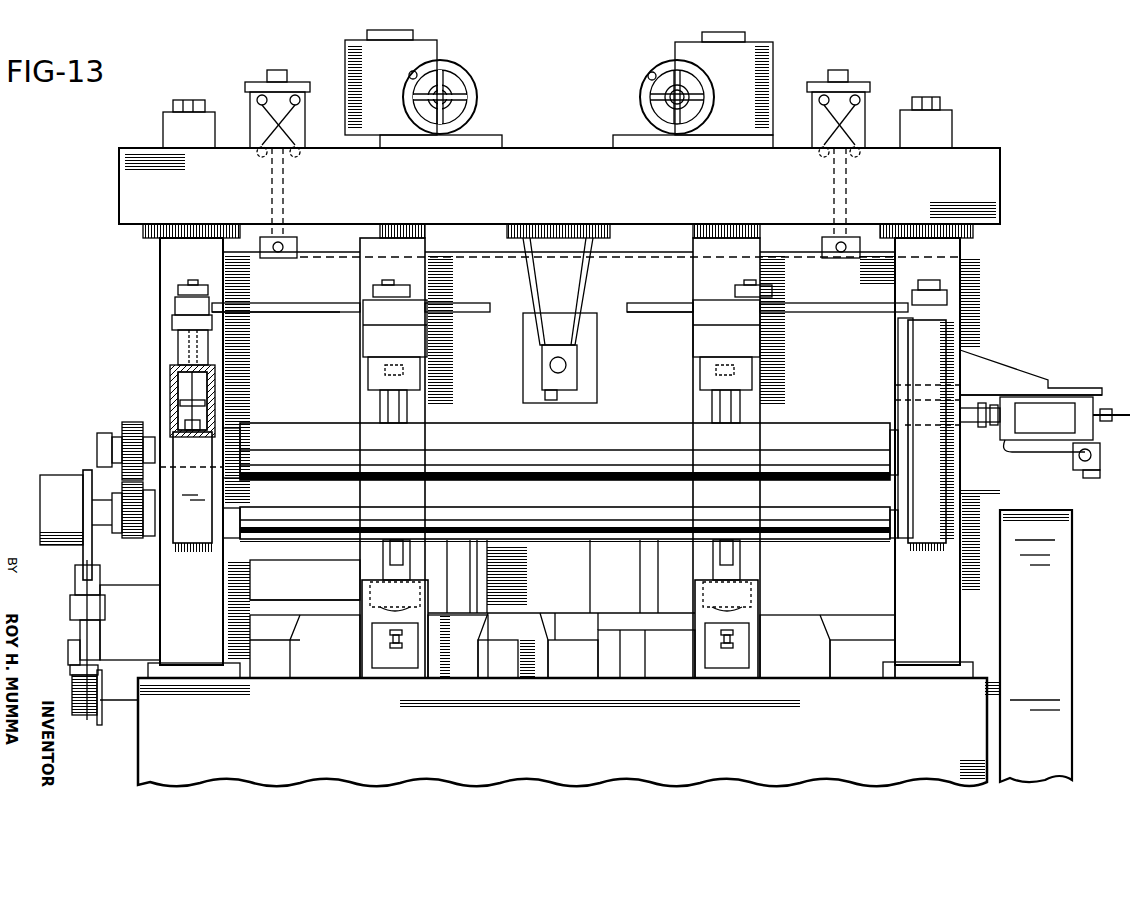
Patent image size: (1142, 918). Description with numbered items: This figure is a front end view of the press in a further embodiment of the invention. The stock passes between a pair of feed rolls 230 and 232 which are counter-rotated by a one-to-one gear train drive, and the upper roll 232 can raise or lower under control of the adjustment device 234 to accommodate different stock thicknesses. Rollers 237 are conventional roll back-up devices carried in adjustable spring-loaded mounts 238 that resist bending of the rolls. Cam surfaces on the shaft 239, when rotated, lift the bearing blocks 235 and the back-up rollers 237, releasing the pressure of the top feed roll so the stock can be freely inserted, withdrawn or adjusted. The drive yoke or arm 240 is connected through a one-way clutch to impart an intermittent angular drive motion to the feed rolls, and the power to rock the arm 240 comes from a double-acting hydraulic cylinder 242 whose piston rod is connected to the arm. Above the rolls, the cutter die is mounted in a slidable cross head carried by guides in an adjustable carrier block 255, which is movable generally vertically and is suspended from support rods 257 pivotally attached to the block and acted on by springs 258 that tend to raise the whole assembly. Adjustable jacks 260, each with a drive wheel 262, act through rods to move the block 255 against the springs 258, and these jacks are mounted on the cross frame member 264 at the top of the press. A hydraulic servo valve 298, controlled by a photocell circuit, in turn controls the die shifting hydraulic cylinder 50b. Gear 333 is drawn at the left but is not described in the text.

The cross frame member 264 is at (120, 186).
The springs 258 is at (250, 98).
The adjustable jacks 260 is at (440, 46).
The drive wheel 262 is at (477, 87).
The support rods 257 is at (275, 235).
The shaft 239 is at (288, 303).
The adjustable carrier block 255 is at (640, 294).
The adjustment device 234 is at (168, 378).
The adjustable spring-loaded mounts 238 is at (362, 375).
The rollers 237 is at (385, 410).
The upper feed roll 232 is at (646, 435).
The feed roll 230 is at (575, 495).
The bearing blocks 235 is at (168, 432).
The drive gear 333 is at (120, 425).
The drive yoke or arm 240 is at (88, 548).
The double-acting hydraulic cylinder 242 is at (102, 635).
The die shifting hydraulic cylinder 50b is at (1050, 443).
The hydraulic servo valve 298 is at (1090, 478).